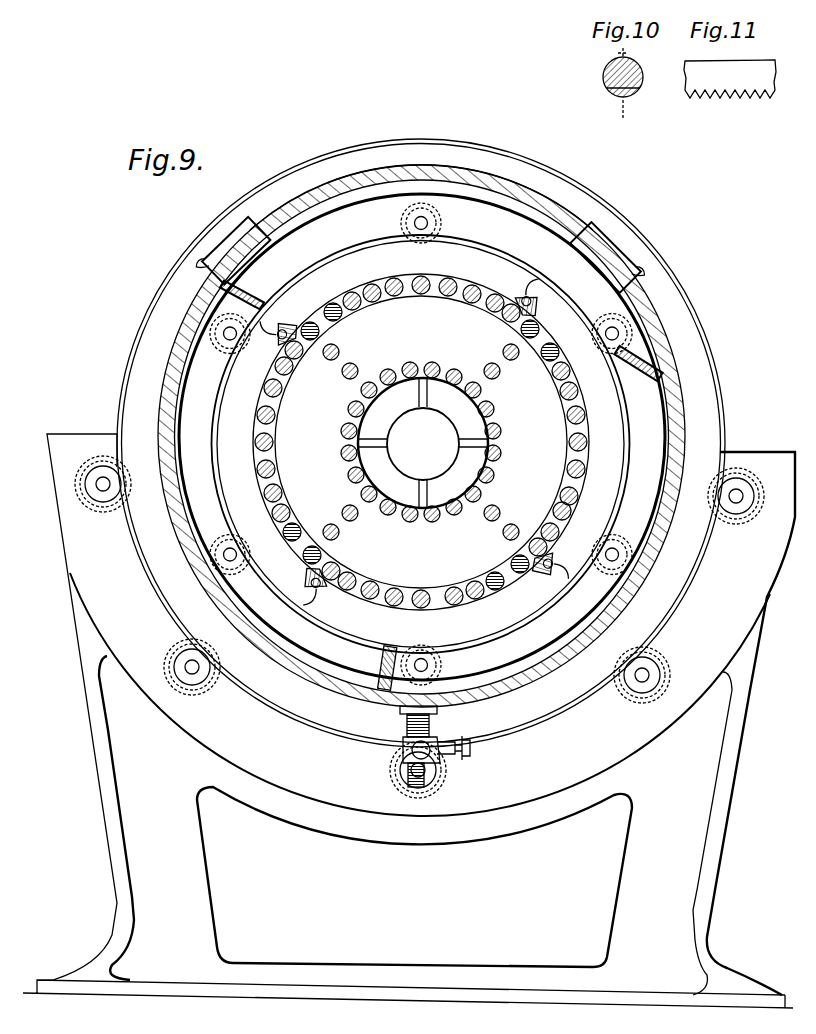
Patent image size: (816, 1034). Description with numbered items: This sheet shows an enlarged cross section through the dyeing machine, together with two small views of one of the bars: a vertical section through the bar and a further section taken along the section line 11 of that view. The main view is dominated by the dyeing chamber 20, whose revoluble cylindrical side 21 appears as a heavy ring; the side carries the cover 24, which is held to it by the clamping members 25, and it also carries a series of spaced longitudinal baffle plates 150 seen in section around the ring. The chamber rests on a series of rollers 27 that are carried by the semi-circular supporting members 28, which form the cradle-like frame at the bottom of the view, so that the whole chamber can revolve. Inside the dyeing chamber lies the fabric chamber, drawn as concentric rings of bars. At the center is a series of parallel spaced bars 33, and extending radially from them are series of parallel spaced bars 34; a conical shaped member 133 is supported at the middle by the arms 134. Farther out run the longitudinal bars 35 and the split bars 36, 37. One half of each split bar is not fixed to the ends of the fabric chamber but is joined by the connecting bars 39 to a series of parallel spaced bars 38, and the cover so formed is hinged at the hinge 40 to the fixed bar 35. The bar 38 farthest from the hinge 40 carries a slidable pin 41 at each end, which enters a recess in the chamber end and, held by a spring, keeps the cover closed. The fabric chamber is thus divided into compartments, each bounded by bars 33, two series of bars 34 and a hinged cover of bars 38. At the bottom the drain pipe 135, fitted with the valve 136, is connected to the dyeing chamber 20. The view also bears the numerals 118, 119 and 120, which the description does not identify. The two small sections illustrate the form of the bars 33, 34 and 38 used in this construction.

In FIG. 10, the section line 11 is at (616, 53).
In FIG. 9, the dyeing chamber 20 is at (422, 437).
In FIG. 9, the revoluble cylindrical side 21 is at (668, 352).
In FIG. 9, the cover 24 is at (455, 175).
In FIG. 9, the clamping members 25 is at (225, 240).
In FIG. 9, the rollers 27 is at (110, 505).
In FIG. 9, the semi-circular supporting members 28 is at (197, 742).
In FIG. 9, the parallel spaced bars 33 is at (342, 450).
In FIG. 10, the parallel spaced bars 33 is at (603, 76).
In FIG. 11, the parallel spaced bars 33 is at (733, 78).
In FIG. 9, the parallel spaced bars 34 is at (358, 362).
In FIG. 9, the bars 35 is at (310, 322).
In FIG. 9, the split bars 36 is at (272, 358).
In FIG. 9, the split bars 37 is at (335, 303).
In FIG. 9, the parallel spaced bars 38 is at (448, 282).
In FIG. 9, the connecting bars 39 is at (430, 300).
In FIG. 9, the hinge 40 is at (283, 333).
In FIG. 9, the slidable pin 41 is at (355, 292).
In FIG. 9, the inner ring 118 is at (219, 421).
In FIG. 9, the bolt 119 is at (232, 340).
In FIG. 9, the ring flange 120 is at (622, 400).
In FIG. 9, the conical shaped member 133 is at (423, 444).
In FIG. 9, the arms 134 is at (418, 392).
In FIG. 9, the drain pipe 135 is at (405, 728).
In FIG. 9, the valve 136 is at (450, 760).
In FIG. 9, the baffle plates 150 is at (232, 287).